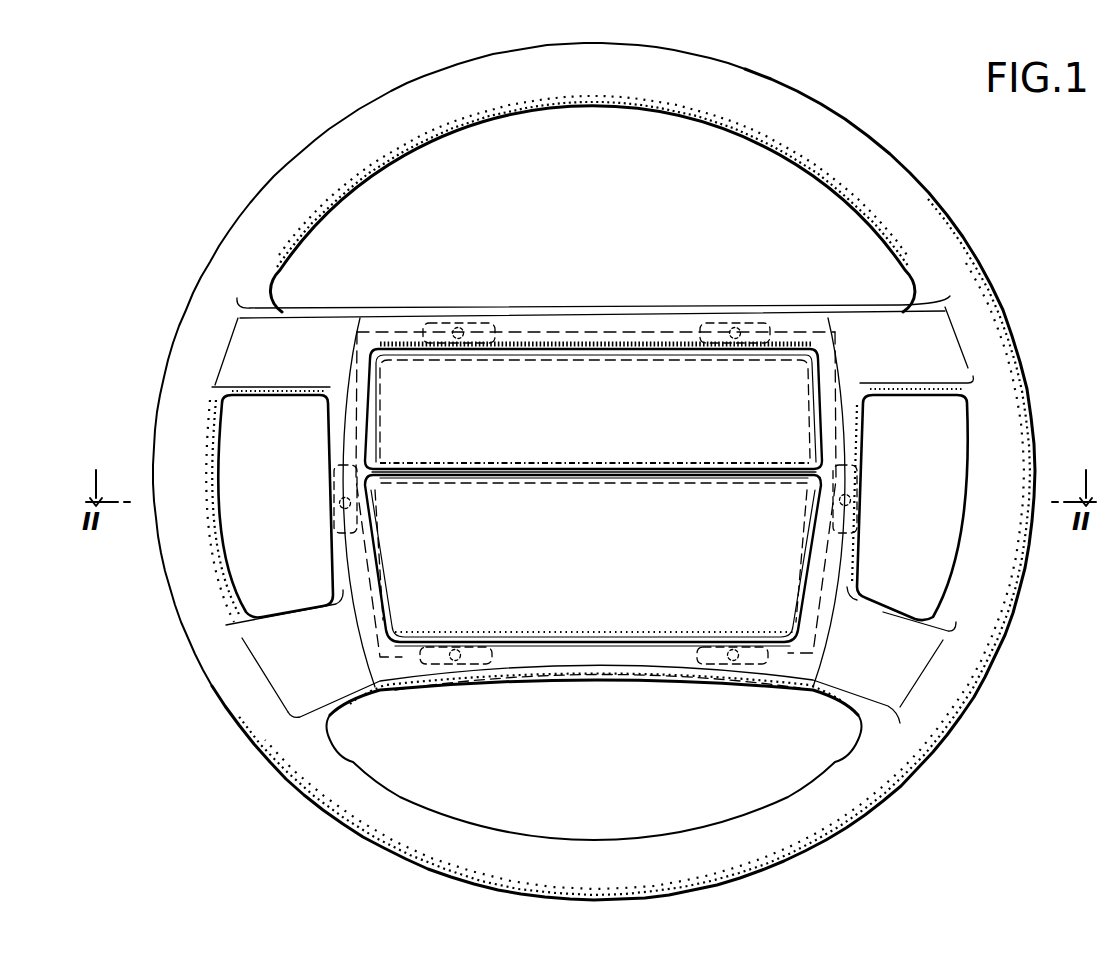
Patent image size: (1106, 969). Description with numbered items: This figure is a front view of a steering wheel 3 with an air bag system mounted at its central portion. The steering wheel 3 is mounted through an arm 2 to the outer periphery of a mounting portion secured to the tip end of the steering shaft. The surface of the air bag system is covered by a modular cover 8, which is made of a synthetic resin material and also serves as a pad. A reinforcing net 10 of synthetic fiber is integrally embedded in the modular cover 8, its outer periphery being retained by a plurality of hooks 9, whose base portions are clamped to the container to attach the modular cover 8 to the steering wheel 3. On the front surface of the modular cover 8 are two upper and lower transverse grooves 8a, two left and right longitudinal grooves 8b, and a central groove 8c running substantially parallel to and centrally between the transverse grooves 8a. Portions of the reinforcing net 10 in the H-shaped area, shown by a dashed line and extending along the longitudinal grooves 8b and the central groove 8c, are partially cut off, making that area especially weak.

The arm 2 is at (305, 322).
The steering wheel 3 is at (930, 207).
The modular cover 8 is at (593, 495).
The transverse grooves 8a is at (535, 352).
The longitudinal grooves 8b is at (370, 414).
The central groove 8c is at (537, 478).
The hooks 9 is at (480, 325).
The reinforcing net 10 is at (586, 330).